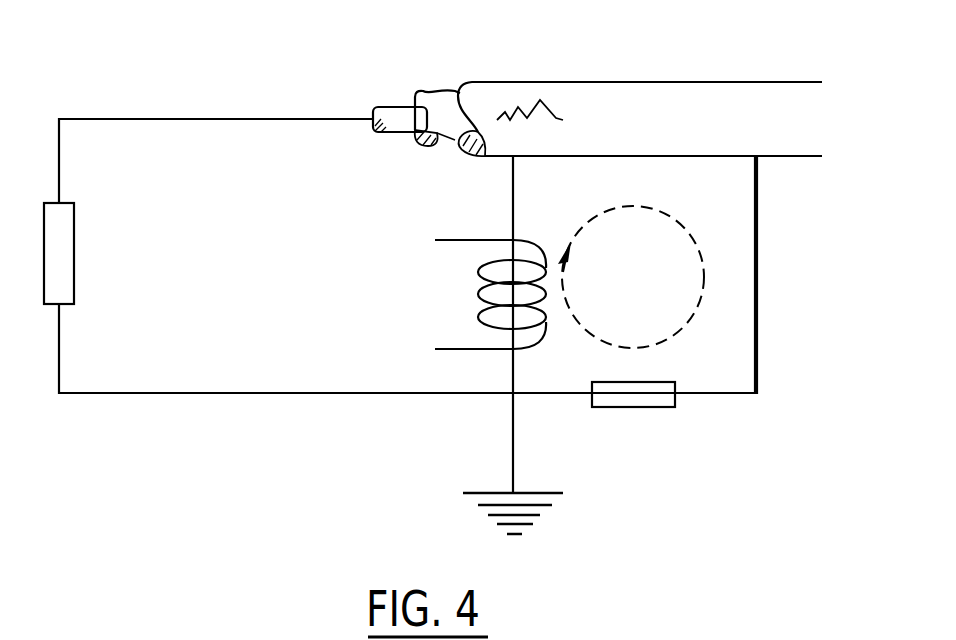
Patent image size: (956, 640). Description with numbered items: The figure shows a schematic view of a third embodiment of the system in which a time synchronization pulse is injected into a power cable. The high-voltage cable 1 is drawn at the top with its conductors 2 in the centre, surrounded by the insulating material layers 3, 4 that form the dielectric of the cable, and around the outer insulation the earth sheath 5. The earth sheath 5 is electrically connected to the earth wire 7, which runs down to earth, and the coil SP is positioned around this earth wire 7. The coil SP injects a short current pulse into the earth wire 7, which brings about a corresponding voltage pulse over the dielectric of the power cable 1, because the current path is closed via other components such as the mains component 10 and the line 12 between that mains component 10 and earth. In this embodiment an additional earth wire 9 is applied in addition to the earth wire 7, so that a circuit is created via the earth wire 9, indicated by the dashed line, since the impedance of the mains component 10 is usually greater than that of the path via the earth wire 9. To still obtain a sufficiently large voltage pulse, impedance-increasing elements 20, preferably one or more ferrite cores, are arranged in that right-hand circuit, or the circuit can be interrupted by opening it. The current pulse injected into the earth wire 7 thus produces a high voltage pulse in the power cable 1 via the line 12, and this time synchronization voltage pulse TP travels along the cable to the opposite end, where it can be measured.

The high-voltage cable 1 is at (665, 76).
The conductors 2 is at (384, 108).
The insulating material layer 3 is at (437, 98).
The insulating material layer 4 is at (446, 136).
The earth sheath 5 is at (503, 83).
The earth wire 7 is at (510, 203).
The additional earth wire 9 is at (757, 283).
The mains component 10 is at (67, 267).
The line 12 is at (62, 345).
The impedance-increasing elements 20 is at (632, 407).
The time synchronization voltage pulse TP is at (702, 118).
The coil SP is at (502, 303).